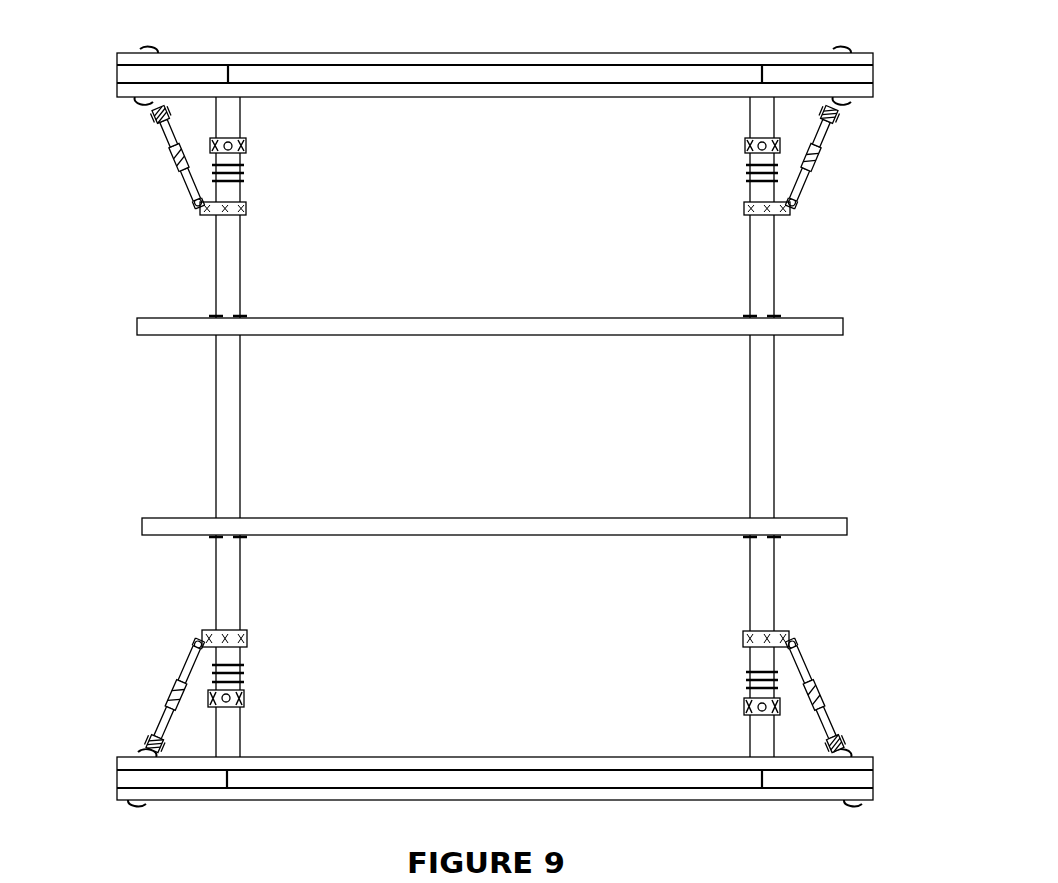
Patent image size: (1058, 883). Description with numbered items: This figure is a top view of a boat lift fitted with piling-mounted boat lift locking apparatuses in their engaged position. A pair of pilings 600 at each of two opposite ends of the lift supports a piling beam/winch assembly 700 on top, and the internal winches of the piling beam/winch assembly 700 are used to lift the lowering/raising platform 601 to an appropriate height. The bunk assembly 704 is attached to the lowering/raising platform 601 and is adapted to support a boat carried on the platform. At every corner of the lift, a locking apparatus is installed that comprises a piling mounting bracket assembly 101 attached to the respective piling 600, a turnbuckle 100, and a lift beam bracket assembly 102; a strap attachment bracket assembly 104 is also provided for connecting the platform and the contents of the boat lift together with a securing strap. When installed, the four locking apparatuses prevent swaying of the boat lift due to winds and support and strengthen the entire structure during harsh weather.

The turnbuckle 100 is at (167, 148).
The piling mounting bracket assembly 101 is at (150, 103).
The lift beam bracket assembly 102 is at (247, 208).
The strap attachment bracket assembly 104 is at (246, 168).
The piling 600 is at (150, 52).
The lowering/raising platform 601 is at (226, 458).
The piling beam/winch assembly 700 is at (471, 73).
The bunk assembly 704 is at (440, 527).